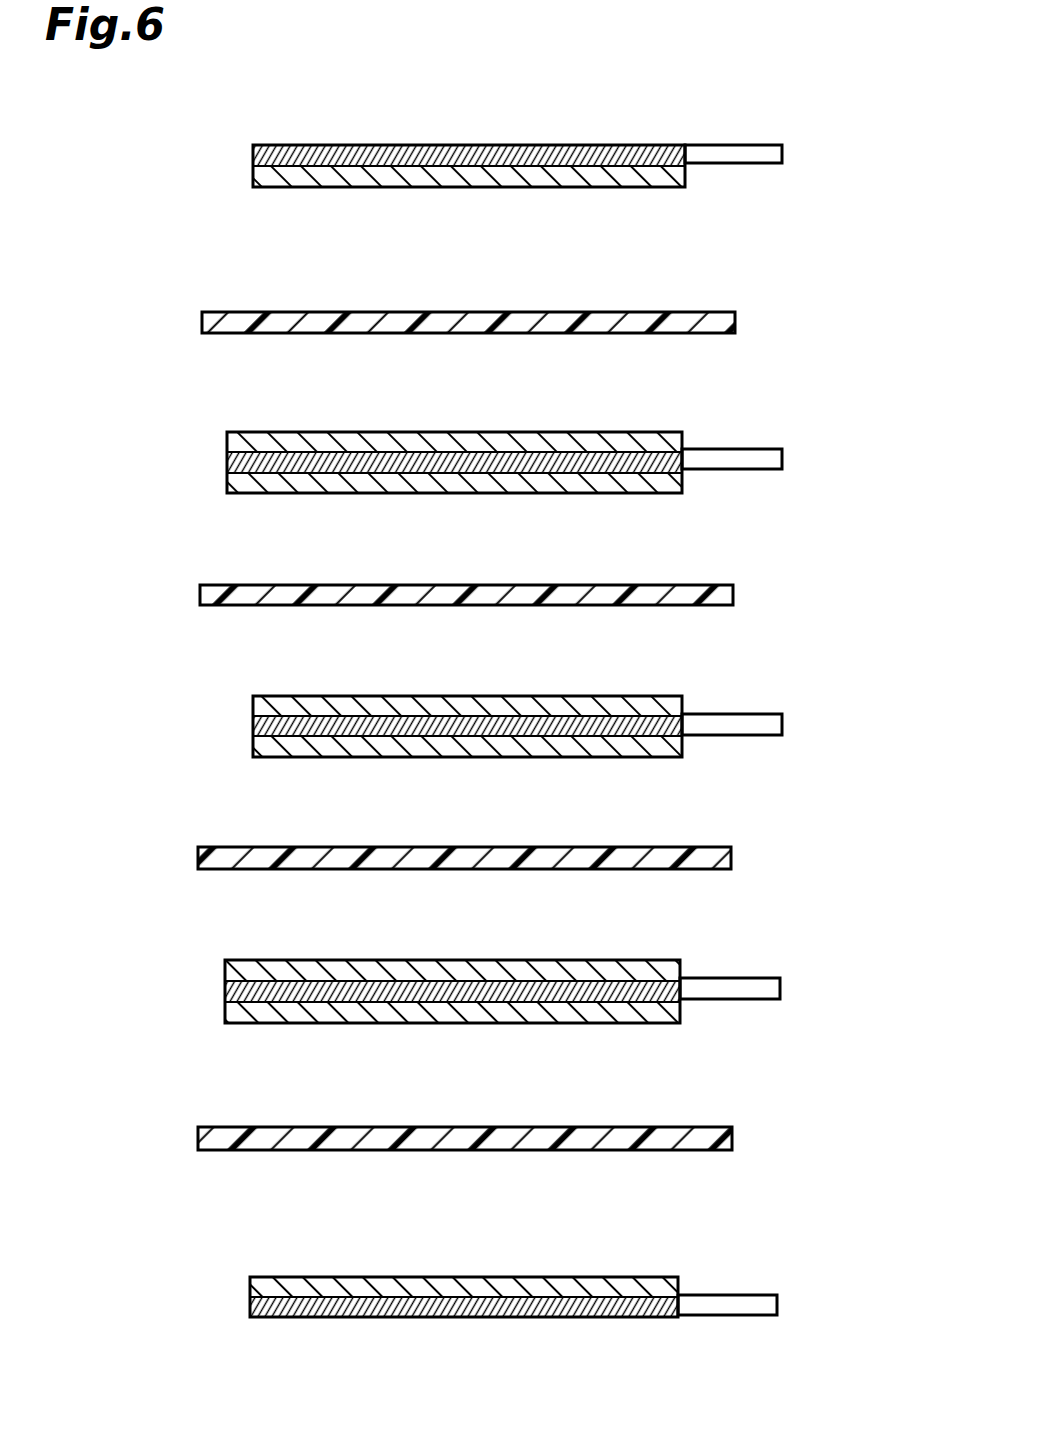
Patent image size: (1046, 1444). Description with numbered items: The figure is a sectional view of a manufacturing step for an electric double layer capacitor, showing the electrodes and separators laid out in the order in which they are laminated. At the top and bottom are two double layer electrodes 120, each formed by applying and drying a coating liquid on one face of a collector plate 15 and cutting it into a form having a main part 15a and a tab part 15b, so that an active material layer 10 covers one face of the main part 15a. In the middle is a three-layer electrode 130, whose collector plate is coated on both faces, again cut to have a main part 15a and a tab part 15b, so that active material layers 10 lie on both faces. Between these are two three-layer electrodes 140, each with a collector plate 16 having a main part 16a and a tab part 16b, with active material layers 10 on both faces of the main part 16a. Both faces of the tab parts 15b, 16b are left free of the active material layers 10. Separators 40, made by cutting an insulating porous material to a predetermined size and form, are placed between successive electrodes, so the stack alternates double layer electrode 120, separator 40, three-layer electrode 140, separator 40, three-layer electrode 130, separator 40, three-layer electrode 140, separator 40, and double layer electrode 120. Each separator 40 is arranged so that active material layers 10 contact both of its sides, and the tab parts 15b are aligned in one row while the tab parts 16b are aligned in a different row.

The active material layer 10 is at (253, 177).
The collector plate 15 is at (253, 153).
The main part 15a is at (622, 143).
The tab part 15b is at (783, 153).
The collector plate 16 is at (227, 462).
The main part 16a is at (620, 447).
The tab part 16b is at (783, 459).
The separator 40 is at (202, 323).
The double layer electrode 120 is at (152, 140).
The three-layer electrode 130 is at (152, 692).
The three-layer electrode 140 is at (152, 428).